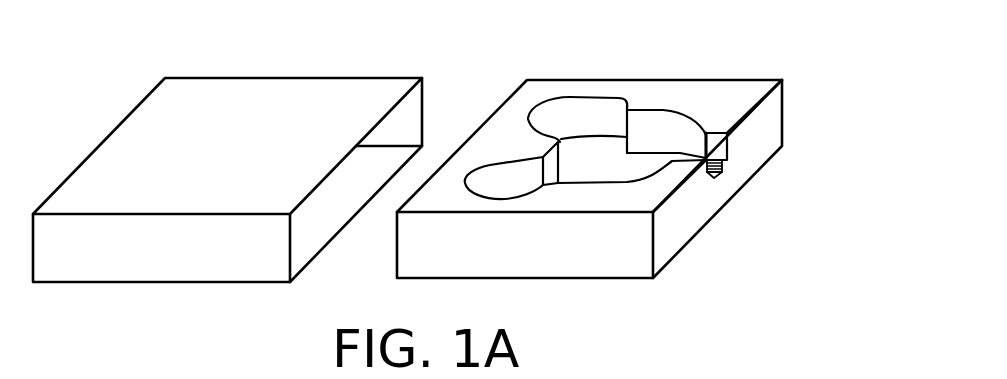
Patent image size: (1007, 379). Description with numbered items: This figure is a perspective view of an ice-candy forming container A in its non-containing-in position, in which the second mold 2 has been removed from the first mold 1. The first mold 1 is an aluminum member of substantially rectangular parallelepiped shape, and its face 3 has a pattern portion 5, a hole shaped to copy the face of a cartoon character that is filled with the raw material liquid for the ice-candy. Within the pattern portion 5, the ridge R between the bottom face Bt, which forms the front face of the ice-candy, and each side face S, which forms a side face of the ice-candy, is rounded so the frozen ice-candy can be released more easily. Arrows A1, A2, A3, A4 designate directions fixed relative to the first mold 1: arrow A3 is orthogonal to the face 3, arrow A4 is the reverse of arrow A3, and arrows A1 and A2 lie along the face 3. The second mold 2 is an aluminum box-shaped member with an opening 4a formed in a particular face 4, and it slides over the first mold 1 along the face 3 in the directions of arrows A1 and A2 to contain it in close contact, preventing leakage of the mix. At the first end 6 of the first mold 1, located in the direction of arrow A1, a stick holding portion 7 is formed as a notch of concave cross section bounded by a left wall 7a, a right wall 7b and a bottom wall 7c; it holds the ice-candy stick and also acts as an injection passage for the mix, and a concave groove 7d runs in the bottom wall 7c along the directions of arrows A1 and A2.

The first mold 1 is at (750, 80).
The second mold 2 is at (242, 78).
The face 3 is at (682, 102).
The face 4 is at (442, 94).
The opening 4a is at (442, 122).
The pattern portion 5 is at (586, 105).
The first end 6 is at (677, 233).
The stick holding portion 7 is at (765, 106).
The left wall 7a is at (687, 162).
The right wall 7b is at (714, 144).
The bottom wall 7c is at (727, 158).
The concave groove 7d is at (718, 172).
The ridge R is at (572, 133).
The side face S is at (650, 123).
The bottom face Bt is at (612, 148).
The ice-candy forming container A is at (108, 92).
The arrow A1 is at (541, 17).
The arrow A2 is at (532, 30).
The arrow A3 is at (837, 244).
The arrow A4 is at (855, 247).